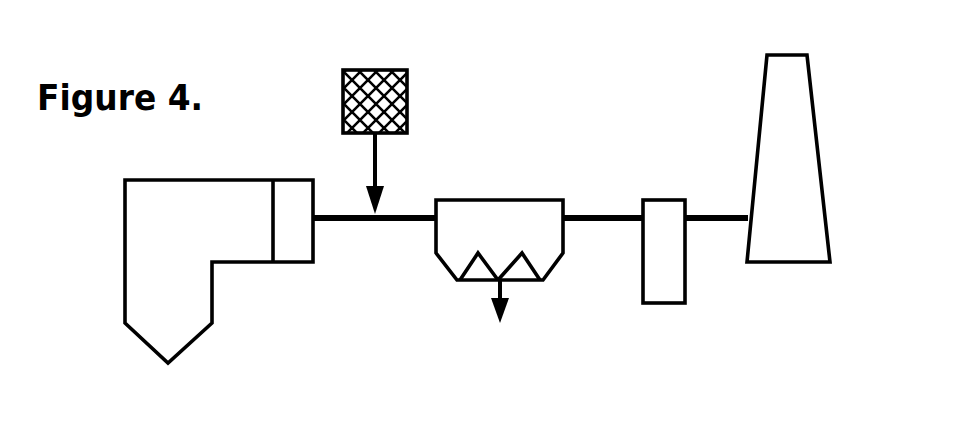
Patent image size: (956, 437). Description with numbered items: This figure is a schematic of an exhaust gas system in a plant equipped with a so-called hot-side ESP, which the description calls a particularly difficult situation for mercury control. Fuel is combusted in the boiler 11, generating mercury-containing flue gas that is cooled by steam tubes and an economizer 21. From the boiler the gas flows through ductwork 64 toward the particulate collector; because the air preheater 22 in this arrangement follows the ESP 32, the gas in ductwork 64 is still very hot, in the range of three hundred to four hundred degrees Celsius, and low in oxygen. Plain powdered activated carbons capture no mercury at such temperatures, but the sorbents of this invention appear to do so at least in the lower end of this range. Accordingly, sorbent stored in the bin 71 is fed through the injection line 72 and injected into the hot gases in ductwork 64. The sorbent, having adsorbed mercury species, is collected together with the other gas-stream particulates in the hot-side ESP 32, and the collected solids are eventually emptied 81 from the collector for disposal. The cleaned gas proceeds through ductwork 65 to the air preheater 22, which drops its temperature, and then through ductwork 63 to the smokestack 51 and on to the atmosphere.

The boiler 11 is at (150, 323).
The economizer 21 is at (290, 243).
The air preheater 22 is at (660, 282).
The hot-side ESP 32 is at (518, 220).
The smokestack 51 is at (767, 248).
The ductwork 63 is at (708, 228).
The ductwork 64 is at (350, 225).
The ductwork 65 is at (585, 227).
The bin 71 is at (360, 90).
The injection line 72 is at (373, 152).
The emptying of collected sorbent 81 is at (497, 319).